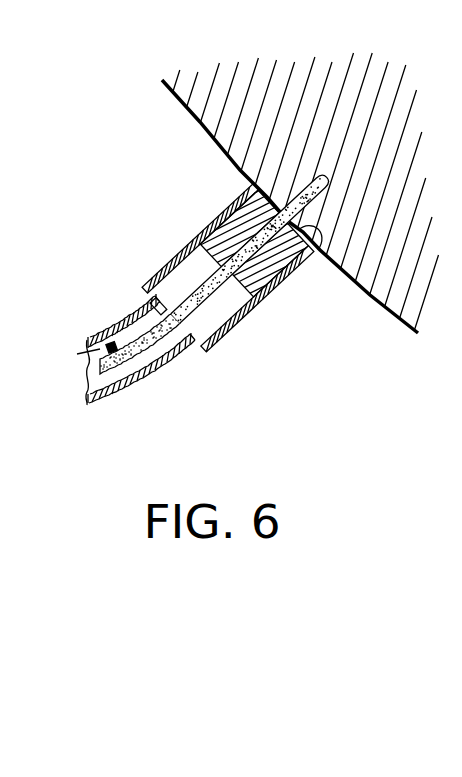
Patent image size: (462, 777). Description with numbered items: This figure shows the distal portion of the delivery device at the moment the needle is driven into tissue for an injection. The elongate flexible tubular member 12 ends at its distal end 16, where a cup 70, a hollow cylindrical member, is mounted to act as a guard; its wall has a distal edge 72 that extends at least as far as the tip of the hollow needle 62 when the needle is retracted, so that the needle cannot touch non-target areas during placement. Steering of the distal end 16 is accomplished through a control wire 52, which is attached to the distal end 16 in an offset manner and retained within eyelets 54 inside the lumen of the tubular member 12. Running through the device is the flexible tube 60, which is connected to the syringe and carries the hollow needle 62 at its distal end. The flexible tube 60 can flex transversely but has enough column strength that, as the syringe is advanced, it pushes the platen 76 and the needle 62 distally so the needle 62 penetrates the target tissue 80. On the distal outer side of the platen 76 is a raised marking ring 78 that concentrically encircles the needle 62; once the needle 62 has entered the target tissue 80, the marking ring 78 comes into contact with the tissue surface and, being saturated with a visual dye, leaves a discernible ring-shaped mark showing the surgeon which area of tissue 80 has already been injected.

The tubular member 12 is at (85, 405).
The distal end 16 is at (170, 375).
The control wire 52 is at (87, 357).
The eyelets 54 is at (112, 344).
The flexible tube 60 is at (113, 405).
The hollow needle 62 is at (310, 175).
The cup 70 is at (213, 351).
The distal edge 72 is at (243, 189).
The platen 76 is at (256, 314).
The marking ring 78 is at (320, 242).
The target tissue 80 is at (395, 315).